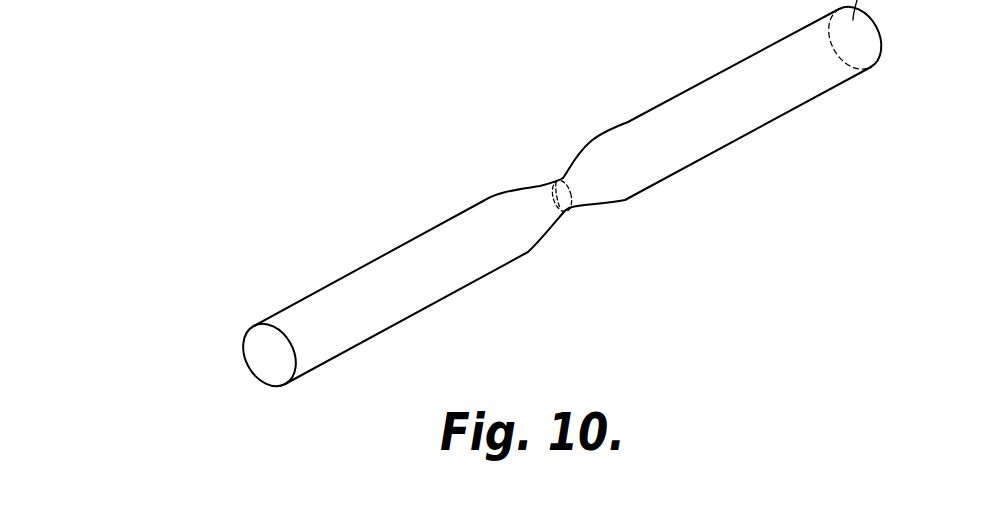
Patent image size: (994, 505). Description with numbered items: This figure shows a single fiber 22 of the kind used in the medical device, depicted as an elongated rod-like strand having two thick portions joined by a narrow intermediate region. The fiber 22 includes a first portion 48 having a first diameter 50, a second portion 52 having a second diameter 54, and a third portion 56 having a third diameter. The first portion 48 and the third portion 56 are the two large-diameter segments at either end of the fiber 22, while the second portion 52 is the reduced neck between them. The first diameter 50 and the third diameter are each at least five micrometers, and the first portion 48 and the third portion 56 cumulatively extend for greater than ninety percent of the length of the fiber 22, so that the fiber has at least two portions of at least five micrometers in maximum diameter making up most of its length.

The fiber 22 is at (471, 197).
The first portion 48 is at (375, 259).
The first diameter 50 is at (262, 361).
The second portion 52 is at (560, 213).
The second diameter 54 is at (563, 176).
The third portion 56 is at (763, 128).